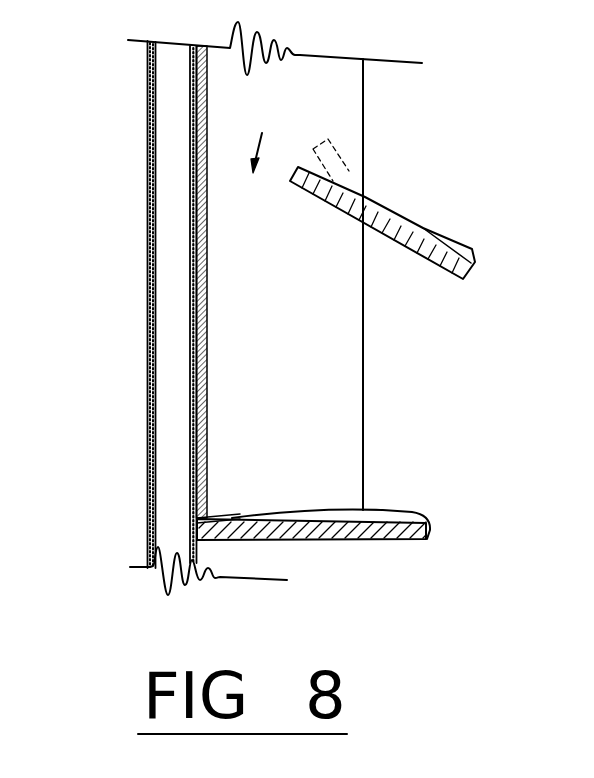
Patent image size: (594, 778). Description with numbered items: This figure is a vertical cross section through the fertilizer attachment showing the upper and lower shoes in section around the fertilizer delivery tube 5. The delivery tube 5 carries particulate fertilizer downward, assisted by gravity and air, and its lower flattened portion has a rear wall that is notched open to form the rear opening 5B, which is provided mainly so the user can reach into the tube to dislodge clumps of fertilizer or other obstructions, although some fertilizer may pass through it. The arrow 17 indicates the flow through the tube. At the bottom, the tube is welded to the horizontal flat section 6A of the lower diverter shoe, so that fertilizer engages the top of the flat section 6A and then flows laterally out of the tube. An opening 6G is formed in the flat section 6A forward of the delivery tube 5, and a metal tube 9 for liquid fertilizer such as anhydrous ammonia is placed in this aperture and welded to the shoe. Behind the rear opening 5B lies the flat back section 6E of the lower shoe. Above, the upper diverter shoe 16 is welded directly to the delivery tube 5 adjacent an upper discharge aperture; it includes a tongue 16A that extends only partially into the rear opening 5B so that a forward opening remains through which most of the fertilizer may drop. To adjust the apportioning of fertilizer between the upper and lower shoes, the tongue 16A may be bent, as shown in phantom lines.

The fertilizer delivery tube 5 is at (284, 362).
The rear opening 5B is at (365, 89).
The metal tube 9 is at (148, 285).
The flow direction 17 is at (292, 119).
The upper diverter shoe 16 is at (475, 260).
The tongue 16A is at (325, 178).
The horizontal flat section 6A is at (305, 530).
The flat back section 6E is at (405, 514).
The opening 6G is at (243, 515).